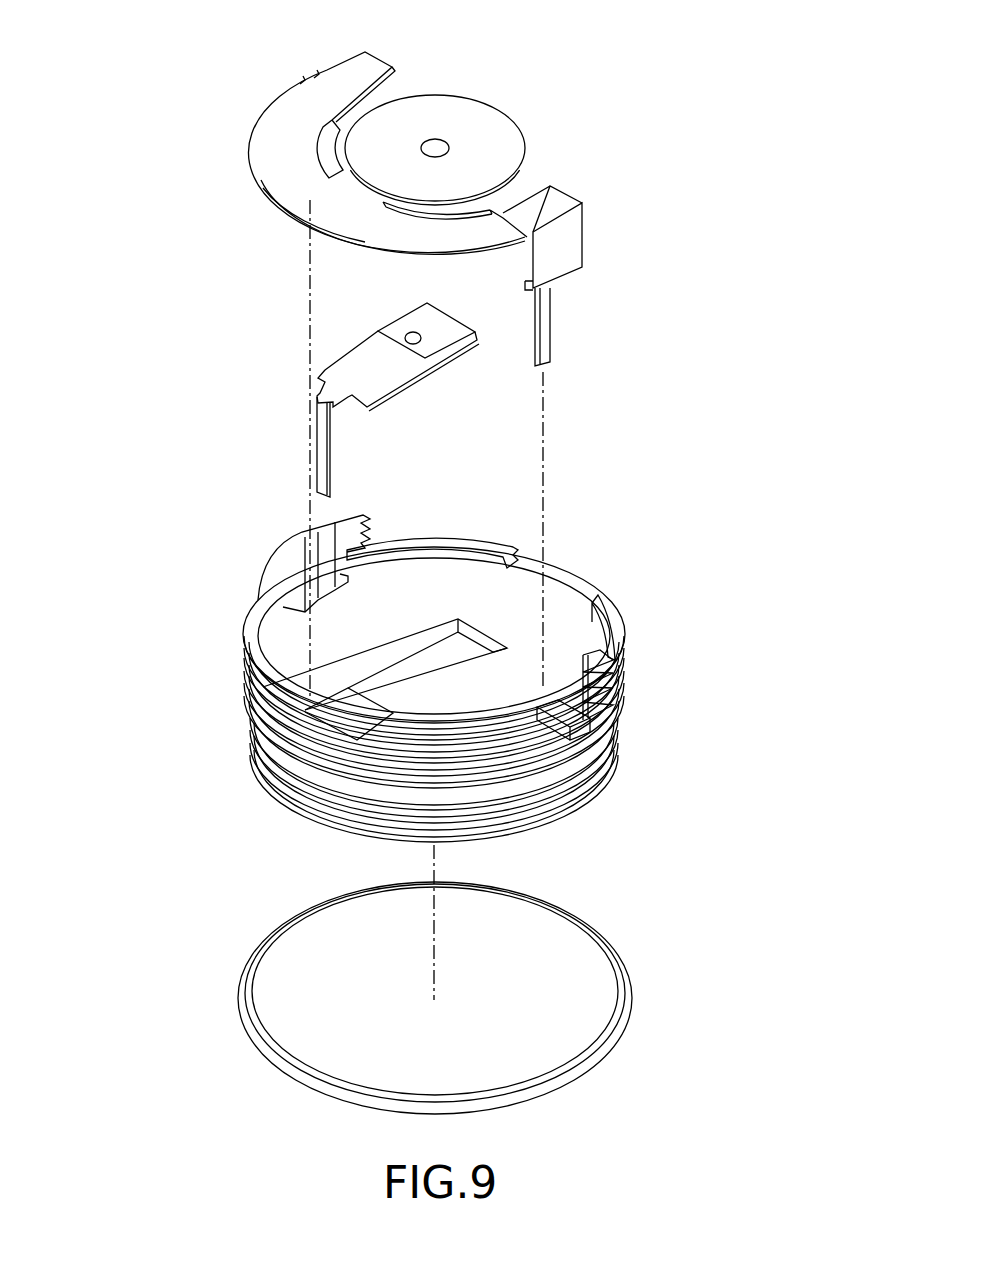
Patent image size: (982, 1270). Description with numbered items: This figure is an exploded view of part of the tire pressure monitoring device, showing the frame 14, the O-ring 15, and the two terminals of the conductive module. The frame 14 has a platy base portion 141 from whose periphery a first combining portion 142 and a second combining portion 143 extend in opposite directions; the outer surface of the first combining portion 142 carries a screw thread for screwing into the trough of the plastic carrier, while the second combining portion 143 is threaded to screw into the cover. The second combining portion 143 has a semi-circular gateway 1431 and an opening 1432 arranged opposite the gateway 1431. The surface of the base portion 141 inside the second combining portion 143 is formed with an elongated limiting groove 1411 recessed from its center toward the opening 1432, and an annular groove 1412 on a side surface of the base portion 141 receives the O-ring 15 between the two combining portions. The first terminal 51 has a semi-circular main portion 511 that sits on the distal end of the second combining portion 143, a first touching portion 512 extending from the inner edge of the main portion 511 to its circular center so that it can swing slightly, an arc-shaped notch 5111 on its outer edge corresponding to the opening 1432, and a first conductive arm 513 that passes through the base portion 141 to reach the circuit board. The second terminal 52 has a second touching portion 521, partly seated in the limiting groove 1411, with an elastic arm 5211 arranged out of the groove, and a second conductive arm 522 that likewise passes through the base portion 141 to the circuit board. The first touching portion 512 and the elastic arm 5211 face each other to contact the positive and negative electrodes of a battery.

The frame 14 is at (424, 660).
The base portion 141 is at (396, 685).
The limiting groove 1411 is at (474, 652).
The annular groove 1412 is at (526, 785).
The first combining portion 142 is at (317, 800).
The second combining portion 143 is at (376, 584).
The gateway 1431 is at (402, 527).
The opening 1432 is at (263, 688).
The O-ring 15 is at (610, 937).
The first terminal 51 is at (405, 197).
The main portion 511 is at (343, 160).
The notch 5111 is at (336, 221).
The first touching portion 512 is at (434, 117).
The first conductive arm 513 is at (545, 325).
The second terminal 52 is at (357, 378).
The second touching portion 521 is at (405, 340).
The elastic arm 5211 is at (404, 325).
The second conductive arm 522 is at (320, 444).